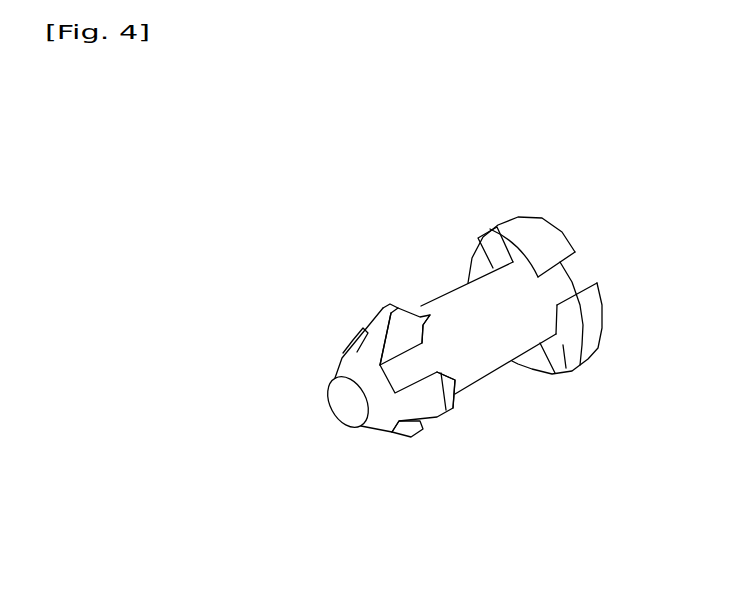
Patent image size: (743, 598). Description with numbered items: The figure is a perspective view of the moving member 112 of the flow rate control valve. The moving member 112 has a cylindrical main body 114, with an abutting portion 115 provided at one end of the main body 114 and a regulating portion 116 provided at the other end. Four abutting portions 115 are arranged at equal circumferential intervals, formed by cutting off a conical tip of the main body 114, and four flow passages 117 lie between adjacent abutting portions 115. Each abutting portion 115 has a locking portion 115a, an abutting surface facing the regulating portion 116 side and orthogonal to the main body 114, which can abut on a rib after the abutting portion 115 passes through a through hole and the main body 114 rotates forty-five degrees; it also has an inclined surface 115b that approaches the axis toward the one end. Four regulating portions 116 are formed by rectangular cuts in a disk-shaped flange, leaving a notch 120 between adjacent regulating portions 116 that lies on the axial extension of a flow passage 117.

The moving member 112 is at (467, 352).
The main body 114 is at (485, 365).
The abutting portion 115 is at (395, 329).
The locking portion 115a is at (420, 294).
The inclined surface 115b is at (392, 328).
The regulating portion 116 is at (537, 230).
The flow passage 117 is at (360, 340).
The notch 120 is at (492, 240).